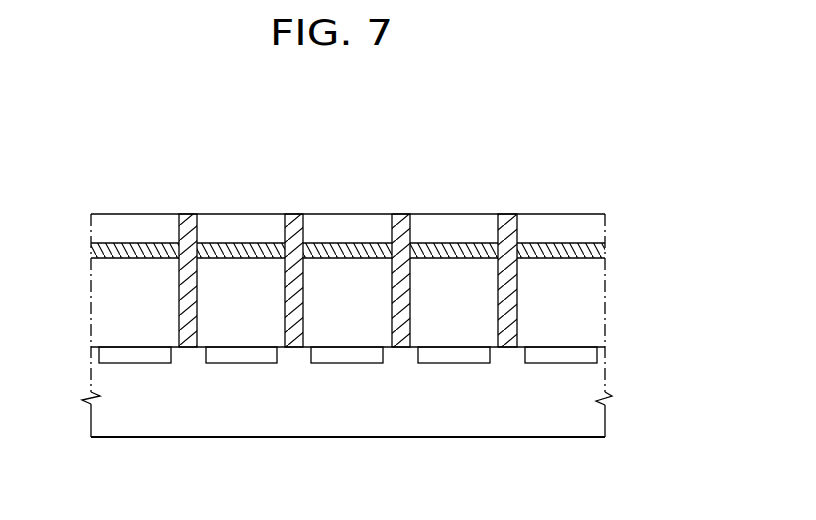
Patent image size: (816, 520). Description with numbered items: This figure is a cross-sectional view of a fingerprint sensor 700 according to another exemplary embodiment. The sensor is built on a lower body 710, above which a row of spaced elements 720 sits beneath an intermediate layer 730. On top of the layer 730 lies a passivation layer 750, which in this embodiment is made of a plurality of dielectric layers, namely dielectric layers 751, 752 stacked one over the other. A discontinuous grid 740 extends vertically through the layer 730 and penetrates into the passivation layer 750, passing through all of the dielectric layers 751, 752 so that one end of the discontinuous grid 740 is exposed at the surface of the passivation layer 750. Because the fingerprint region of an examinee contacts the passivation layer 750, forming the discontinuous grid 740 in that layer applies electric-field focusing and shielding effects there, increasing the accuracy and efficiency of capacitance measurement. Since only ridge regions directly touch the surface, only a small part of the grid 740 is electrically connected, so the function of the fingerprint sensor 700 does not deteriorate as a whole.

The fingerprint sensor 700 is at (391, 299).
The substrate 710 is at (612, 401).
The pads 720 is at (546, 355).
The insulating layer 730 is at (597, 288).
The discontinuous grid 740 is at (503, 220).
The passivation layer 750 is at (419, 237).
The dielectric layer 751 is at (597, 220).
The dielectric layer 752 is at (596, 252).